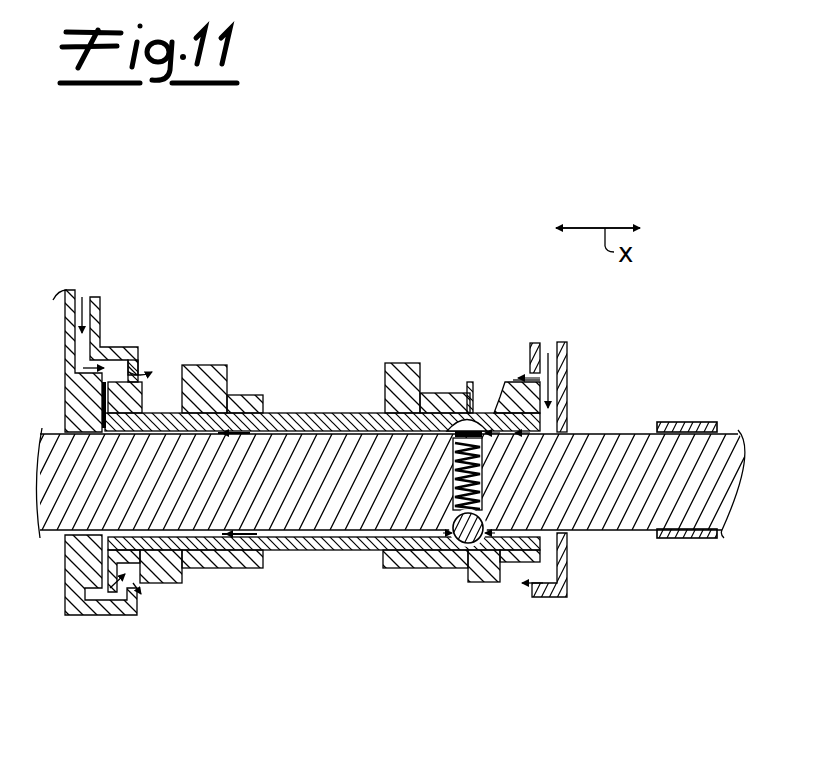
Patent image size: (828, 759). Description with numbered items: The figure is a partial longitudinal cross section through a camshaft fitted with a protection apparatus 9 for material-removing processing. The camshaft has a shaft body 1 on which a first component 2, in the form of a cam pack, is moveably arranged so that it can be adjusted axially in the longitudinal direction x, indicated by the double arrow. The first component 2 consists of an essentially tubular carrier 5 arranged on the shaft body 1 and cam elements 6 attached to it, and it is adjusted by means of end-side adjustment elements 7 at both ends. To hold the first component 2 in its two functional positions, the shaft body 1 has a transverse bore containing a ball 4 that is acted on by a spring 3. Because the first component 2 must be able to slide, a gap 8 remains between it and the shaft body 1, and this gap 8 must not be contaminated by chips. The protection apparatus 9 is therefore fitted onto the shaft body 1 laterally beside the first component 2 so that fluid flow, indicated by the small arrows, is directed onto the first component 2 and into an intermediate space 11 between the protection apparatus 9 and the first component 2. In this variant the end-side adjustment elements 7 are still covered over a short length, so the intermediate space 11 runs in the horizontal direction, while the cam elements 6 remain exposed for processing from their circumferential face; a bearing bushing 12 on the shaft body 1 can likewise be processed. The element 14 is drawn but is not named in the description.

The shaft body 1 is at (322, 518).
The first component 2 is at (314, 390).
The spring 3 is at (423, 533).
The ball 4 is at (452, 543).
The tubular carrier 5 is at (347, 542).
The cam elements 6 is at (197, 372).
The end-side adjustment elements 7 is at (152, 373).
The gap 8 is at (168, 535).
The protection apparatus 9 is at (72, 632).
The intermediate space 11 is at (127, 380).
The bearing bushing 12 is at (702, 540).
The inner ring 14 is at (92, 297).